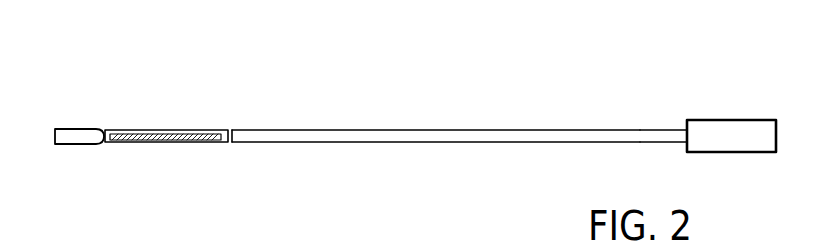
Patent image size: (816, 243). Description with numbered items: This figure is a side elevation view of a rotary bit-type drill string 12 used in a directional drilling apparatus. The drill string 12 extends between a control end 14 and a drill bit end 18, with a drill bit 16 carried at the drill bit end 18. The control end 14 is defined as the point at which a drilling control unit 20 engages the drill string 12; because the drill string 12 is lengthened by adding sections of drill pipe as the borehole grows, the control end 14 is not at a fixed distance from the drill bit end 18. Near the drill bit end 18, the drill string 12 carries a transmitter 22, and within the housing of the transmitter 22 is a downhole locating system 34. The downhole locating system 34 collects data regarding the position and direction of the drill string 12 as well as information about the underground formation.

The drill string 12 is at (367, 133).
The control end 14 is at (673, 133).
The drill bit 16 is at (65, 142).
The drill bit end 18 is at (77, 129).
The drilling control unit 20 is at (736, 120).
The transmitter 22 is at (163, 138).
The downhole locating system 34 is at (180, 137).